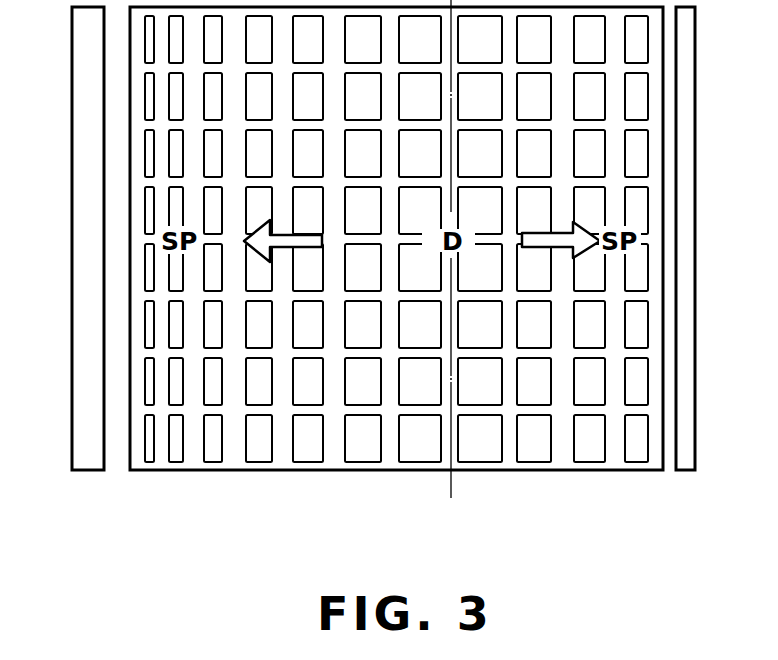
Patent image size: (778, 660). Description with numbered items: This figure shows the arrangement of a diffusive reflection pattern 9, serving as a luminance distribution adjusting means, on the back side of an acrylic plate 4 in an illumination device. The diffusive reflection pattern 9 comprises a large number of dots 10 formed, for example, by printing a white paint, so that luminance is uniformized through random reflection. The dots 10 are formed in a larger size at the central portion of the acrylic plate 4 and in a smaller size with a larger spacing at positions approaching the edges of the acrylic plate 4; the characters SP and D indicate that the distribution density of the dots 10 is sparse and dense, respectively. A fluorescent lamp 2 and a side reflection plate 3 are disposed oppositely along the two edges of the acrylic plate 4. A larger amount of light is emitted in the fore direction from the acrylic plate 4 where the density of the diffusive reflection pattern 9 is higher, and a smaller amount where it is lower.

The fluorescent lamp 2 is at (89, 295).
The side reflection plate 3 is at (685, 311).
The acrylic plate 4 is at (235, 458).
The diffusive reflection pattern 9 is at (426, 490).
The dots 10 is at (508, 518).